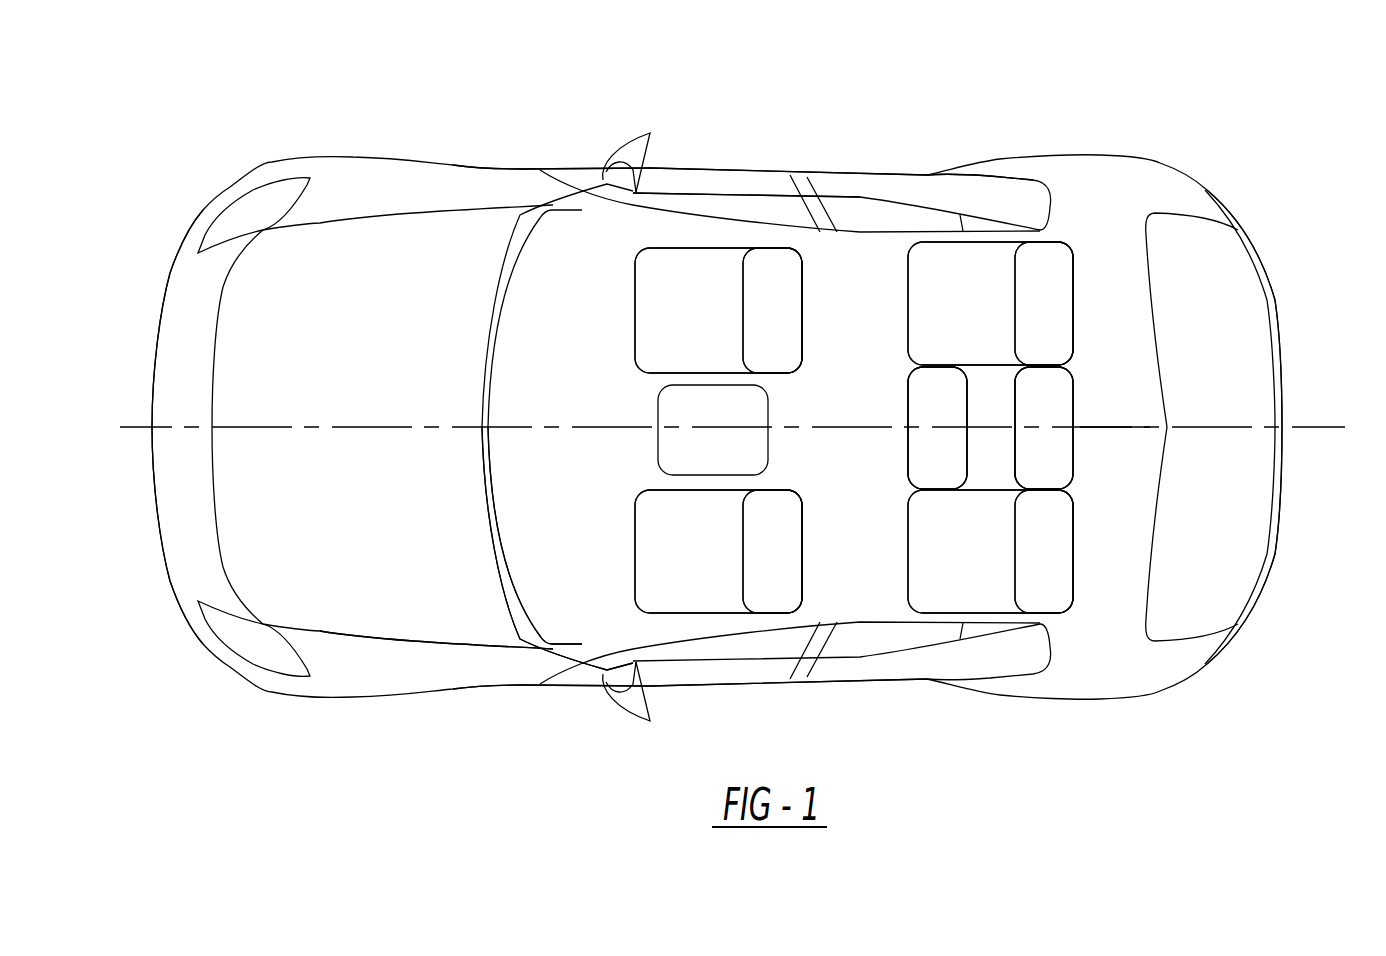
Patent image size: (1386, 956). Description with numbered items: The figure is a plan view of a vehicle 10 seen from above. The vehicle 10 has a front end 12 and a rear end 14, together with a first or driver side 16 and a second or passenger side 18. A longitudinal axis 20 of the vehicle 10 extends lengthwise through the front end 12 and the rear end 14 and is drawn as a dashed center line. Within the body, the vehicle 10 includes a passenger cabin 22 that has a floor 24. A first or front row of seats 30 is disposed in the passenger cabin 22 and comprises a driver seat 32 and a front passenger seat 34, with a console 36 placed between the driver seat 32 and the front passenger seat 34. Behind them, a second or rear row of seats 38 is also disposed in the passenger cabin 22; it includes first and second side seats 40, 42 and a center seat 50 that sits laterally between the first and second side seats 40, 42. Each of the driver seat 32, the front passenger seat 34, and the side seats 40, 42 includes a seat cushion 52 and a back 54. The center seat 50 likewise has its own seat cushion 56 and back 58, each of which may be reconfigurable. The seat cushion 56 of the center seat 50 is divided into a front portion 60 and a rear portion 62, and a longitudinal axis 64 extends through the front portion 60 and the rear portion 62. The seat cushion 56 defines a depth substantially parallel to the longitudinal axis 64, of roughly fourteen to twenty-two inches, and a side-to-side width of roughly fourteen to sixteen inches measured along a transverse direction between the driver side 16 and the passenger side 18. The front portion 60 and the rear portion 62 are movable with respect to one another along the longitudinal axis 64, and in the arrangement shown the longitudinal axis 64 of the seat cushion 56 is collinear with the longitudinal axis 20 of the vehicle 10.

The vehicle 10 is at (310, 98).
The front end 12 is at (183, 464).
The rear end 14 is at (1255, 446).
The driver side 16 is at (517, 677).
The passenger side 18 is at (537, 187).
The longitudinal axis 20 is at (1323, 427).
The passenger cabin 22 is at (547, 573).
The floor 24 is at (552, 500).
The front row of seats 30 is at (725, 158).
The driver seat 32 is at (657, 543).
The front passenger seat 34 is at (660, 322).
The console 36 is at (680, 407).
The rear row of seats 38 is at (925, 163).
The first side seat 40 is at (950, 525).
The second side seat 42 is at (928, 283).
The center seat 50 is at (1060, 395).
The seat cushion 52 is at (655, 277).
The back 54 is at (778, 275).
The seat cushion 56 is at (937, 453).
The back 58 is at (1058, 447).
The front portion 60 is at (930, 395).
The rear portion 62 is at (990, 452).
The longitudinal axis 64 is at (1112, 427).